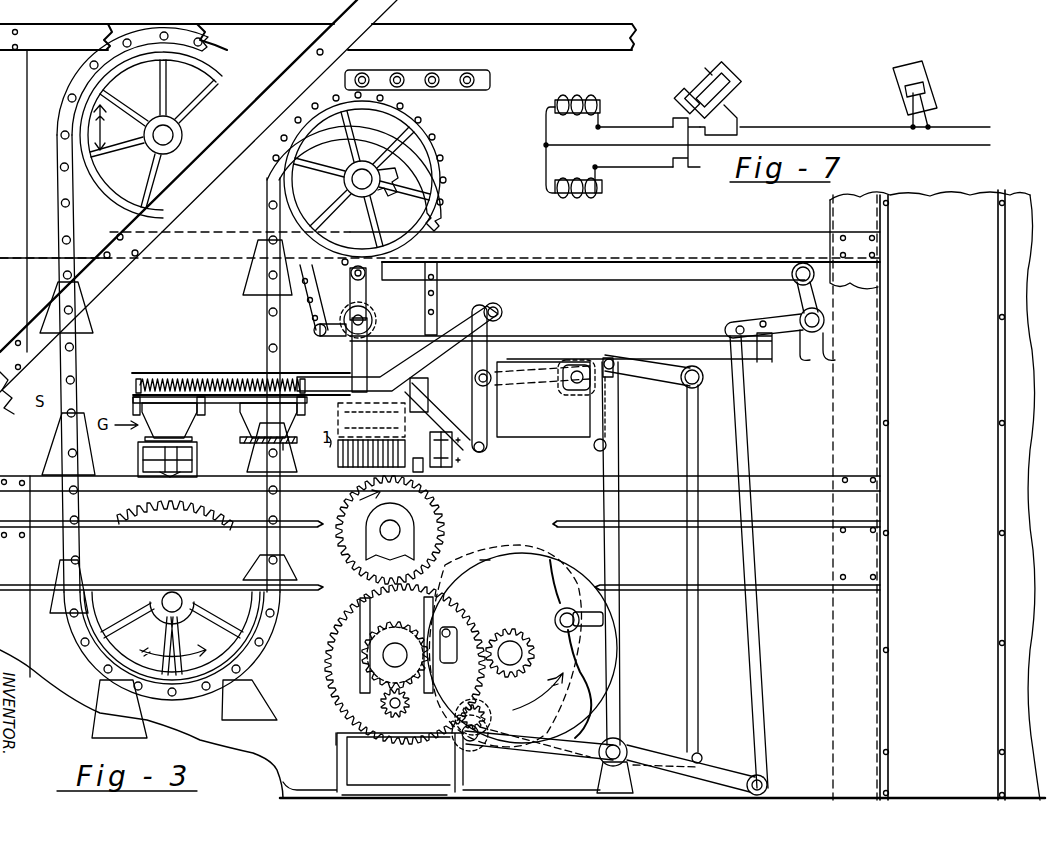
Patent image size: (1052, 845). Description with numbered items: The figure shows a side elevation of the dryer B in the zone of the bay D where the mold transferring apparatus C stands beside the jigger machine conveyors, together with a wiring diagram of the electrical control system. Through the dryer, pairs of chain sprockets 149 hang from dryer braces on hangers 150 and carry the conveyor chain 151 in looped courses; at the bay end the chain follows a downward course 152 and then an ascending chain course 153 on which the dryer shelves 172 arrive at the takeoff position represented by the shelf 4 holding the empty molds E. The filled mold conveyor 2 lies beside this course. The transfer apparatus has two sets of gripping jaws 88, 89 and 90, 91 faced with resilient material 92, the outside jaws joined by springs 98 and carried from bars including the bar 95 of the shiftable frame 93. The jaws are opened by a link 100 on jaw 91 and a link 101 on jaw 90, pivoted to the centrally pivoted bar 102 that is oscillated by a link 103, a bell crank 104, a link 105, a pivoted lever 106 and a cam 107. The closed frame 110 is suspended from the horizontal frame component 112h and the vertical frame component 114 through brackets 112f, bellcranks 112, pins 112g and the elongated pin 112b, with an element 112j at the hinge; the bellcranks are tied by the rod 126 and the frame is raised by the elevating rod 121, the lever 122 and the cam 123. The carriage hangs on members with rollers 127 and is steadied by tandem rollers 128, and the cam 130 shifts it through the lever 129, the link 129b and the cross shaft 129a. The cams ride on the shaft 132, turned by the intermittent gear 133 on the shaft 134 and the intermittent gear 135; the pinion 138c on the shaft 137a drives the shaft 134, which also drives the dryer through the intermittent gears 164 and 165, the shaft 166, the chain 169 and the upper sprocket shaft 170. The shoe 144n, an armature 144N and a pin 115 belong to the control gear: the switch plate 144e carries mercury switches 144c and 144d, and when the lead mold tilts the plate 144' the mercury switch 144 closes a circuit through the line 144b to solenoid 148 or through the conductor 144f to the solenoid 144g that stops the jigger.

In FIG. 3, the hangers 150 is at (270, 128).
In FIG. 3, the conveyor chain 151 is at (92, 60).
In FIG. 3, the dryer shelves 172 is at (178, 84).
In FIG. 3, the downward course 152 is at (70, 220).
In FIG. 3, the upper sprocket shaft 170 is at (382, 186).
In FIG. 3, the chain 169 is at (447, 172).
In FIG. 3, the chain sprockets 149 is at (433, 126).
In FIG. 3, the ascending chain course 153 is at (263, 318).
In FIG. 3, the parallel bar 95 is at (150, 373).
In FIG. 3, the springs 98 is at (134, 386).
In FIG. 3, the mold gripping jaw 88 is at (133, 408).
In FIG. 3, the mold gripping jaw 89 is at (205, 406).
In FIG. 3, the mold gripping jaw 91 is at (305, 408).
In FIG. 3, the resilient material 92 is at (194, 417).
In FIG. 3, the mold gripping jaw 90 is at (252, 430).
In FIG. 3, the output or filled mold conveyor 2 is at (140, 447).
In FIG. 3, the shelf 4 is at (290, 440).
In FIG. 3, the empty molds E is at (284, 425).
In FIG. 3, the solenoid armature 144N is at (371, 460).
In FIG. 3, the shoe 144n is at (407, 405).
In FIG. 3, the switch plate 144e is at (452, 455).
In FIG. 7, the switch plate 144e is at (707, 68).
In FIG. 3, the link 100 is at (480, 325).
In FIG. 3, the centrally pivoted bar 102 is at (492, 322).
In FIG. 3, the cross shaft 129a is at (490, 386).
In FIG. 3, the link 101 is at (432, 395).
In FIG. 3, the frame 93 is at (460, 378).
In FIG. 3, the link 129b is at (528, 370).
In FIG. 3, the tandem rollers 128 is at (590, 388).
In FIG. 3, the bell crank 104 is at (638, 378).
In FIG. 3, the link 103 is at (517, 440).
In FIG. 3, the closed frame 110 is at (688, 342).
In FIG. 3, the lever 129 is at (620, 448).
In FIG. 3, the link 105 is at (698, 425).
In FIG. 3, the rod 126 is at (562, 276).
In FIG. 3, the horizontal frame component 112h is at (652, 256).
In FIG. 3, the mold transferring apparatus C is at (565, 333).
In FIG. 3, the rollers 127 is at (368, 310).
In FIG. 3, the pin 115 is at (375, 320).
In FIG. 3, the brackets 112f is at (354, 296).
In FIG. 3, the bellcranks 112 is at (334, 275).
In FIG. 3, the pins 112g is at (318, 332).
In FIG. 3, the link 112j is at (800, 312).
In FIG. 3, the elongated pin 112b is at (824, 321).
In FIG. 3, the vertical frame component 114 is at (831, 353).
In FIG. 3, the elevating rod 121 is at (742, 447).
In FIG. 3, the lever 122 is at (727, 772).
In FIG. 3, the pivoted lever 106 is at (657, 750).
In FIG. 3, the bay D is at (776, 415).
In FIG. 3, the intermittent gear 133 is at (308, 668).
In FIG. 3, the intermittent gear 164 is at (330, 712).
In FIG. 3, the pinion 138c is at (342, 735).
In FIG. 3, the intermittent gear 165 is at (442, 518).
In FIG. 3, the shaft 166 is at (401, 530).
In FIG. 3, the cam 107 is at (565, 568).
In FIG. 3, the cam 123 is at (485, 562).
In FIG. 3, the shaft 134 is at (392, 643).
In FIG. 3, the intermittent gear 135 is at (522, 672).
In FIG. 3, the shaft 132 is at (505, 642).
In FIG. 3, the shaft 137a is at (395, 712).
In FIG. 3, the cam 130 is at (512, 758).
In FIG. 3, the dryer B is at (955, 192).
In FIG. 7, the solenoid 144g is at (603, 109).
In FIG. 7, the solenoid 148 is at (602, 190).
In FIG. 7, the line 144b is at (606, 165).
In FIG. 7, the circuit conductor 144f is at (640, 124).
In FIG. 7, the mercury switch 144c is at (695, 88).
In FIG. 7, the mercury switch 144d is at (720, 82).
In FIG. 7, the mercury switch 144 is at (897, 95).
In FIG. 7, the plate 144' is at (969, 96).